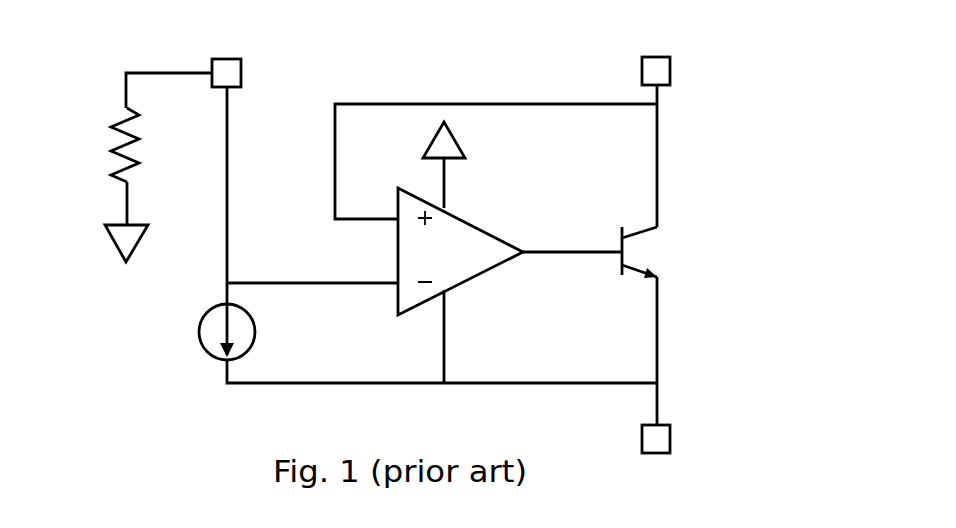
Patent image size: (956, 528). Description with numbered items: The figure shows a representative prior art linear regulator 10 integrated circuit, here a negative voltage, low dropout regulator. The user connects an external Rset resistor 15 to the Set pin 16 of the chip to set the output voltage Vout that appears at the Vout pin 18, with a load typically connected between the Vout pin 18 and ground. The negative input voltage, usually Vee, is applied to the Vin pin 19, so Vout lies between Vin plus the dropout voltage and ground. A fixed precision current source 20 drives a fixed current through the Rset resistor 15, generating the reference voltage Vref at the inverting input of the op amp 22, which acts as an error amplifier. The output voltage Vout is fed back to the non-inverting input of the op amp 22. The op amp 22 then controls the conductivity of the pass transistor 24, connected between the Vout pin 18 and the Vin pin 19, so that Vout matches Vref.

The linear regulator 10 is at (790, 118).
The Rset resistor 15 is at (145, 148).
The Set pin 16 is at (241, 73).
The Vout pin 18 is at (670, 73).
The Vin pin 19 is at (642, 435).
The fixed precision current source 20 is at (207, 312).
The op amp 22 is at (477, 227).
The pass transistor 24 is at (656, 247).